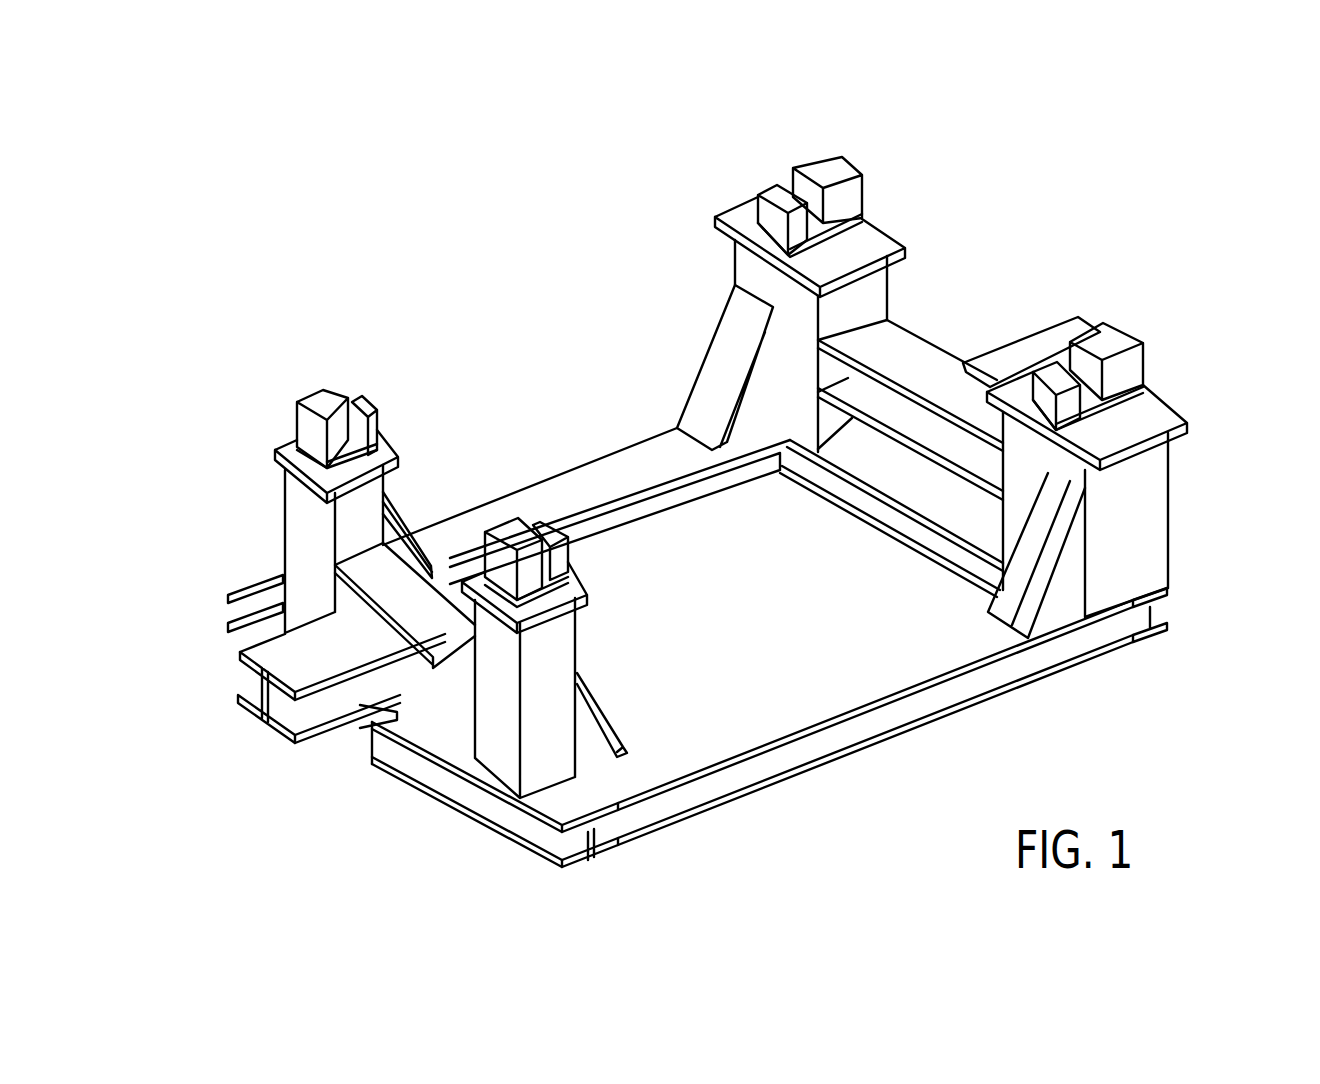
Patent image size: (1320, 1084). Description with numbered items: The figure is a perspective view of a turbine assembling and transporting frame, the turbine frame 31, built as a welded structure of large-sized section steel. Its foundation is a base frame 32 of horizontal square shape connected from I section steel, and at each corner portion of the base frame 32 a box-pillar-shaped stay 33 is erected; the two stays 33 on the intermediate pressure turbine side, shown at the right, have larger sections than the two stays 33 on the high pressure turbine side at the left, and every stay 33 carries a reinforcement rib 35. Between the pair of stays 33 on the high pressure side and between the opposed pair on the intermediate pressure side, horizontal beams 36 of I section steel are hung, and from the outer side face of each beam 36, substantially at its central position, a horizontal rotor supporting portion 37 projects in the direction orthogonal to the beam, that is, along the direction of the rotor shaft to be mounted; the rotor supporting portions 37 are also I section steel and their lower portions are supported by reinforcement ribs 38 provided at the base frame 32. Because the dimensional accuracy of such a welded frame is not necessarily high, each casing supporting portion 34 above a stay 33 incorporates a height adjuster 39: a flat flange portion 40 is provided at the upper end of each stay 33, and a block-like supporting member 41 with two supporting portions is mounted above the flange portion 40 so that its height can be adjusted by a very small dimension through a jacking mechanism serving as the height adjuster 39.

The turbine frame 31 is at (707, 488).
The base frame 32 is at (793, 753).
The stay 33 is at (1142, 527).
The casing supporting portion 34 is at (717, 381).
The reinforcement rib 35 is at (697, 400).
The horizontal beam 36 is at (455, 632).
The rotor supporting portion 37 is at (297, 660).
The reinforcement rib 38 is at (341, 731).
The height adjuster 39 is at (861, 238).
The flange portion 40 is at (743, 215).
The supporting member 41 is at (832, 168).